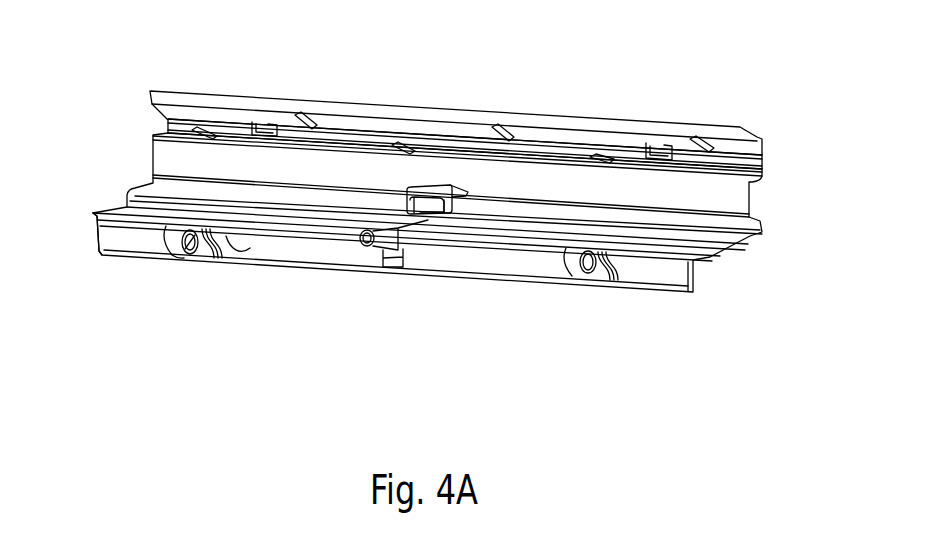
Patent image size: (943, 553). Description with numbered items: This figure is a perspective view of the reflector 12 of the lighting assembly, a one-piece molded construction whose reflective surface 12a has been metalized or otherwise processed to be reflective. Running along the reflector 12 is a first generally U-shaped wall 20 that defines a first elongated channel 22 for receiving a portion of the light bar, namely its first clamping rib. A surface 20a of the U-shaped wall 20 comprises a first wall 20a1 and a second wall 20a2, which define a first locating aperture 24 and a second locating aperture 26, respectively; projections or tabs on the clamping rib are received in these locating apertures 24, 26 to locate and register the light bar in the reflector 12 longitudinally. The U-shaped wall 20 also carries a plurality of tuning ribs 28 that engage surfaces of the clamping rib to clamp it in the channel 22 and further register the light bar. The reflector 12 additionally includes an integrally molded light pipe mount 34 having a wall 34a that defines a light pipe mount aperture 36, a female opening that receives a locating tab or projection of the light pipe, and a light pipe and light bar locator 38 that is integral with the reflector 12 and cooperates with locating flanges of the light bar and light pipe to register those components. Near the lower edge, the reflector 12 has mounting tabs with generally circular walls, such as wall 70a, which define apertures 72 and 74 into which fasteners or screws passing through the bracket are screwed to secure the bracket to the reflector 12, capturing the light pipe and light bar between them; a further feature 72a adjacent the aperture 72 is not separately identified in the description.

The reflector 12 is at (756, 138).
The reflective surface 12a is at (126, 202).
The first generally U-shaped wall 20 is at (392, 123).
The surface of the generally U-shaped wall 20a is at (744, 162).
The first wall 20a1 is at (258, 120).
The second wall 20a2 is at (657, 145).
The first elongated channel 22 is at (576, 157).
The first locating aperture 24 is at (259, 151).
The second locating aperture 26 is at (669, 168).
The tuning ribs 28 is at (178, 137).
The light pipe mount 34 is at (468, 192).
The wall of the light pipe mount 34a is at (444, 215).
The light pipe mount aperture 36 is at (428, 222).
The light pipe and light bar locator 38 is at (382, 266).
The generally circular wall 70a is at (588, 275).
The aperture 72 is at (571, 272).
The mounting hole 72a is at (183, 254).
The aperture 74 is at (168, 244).